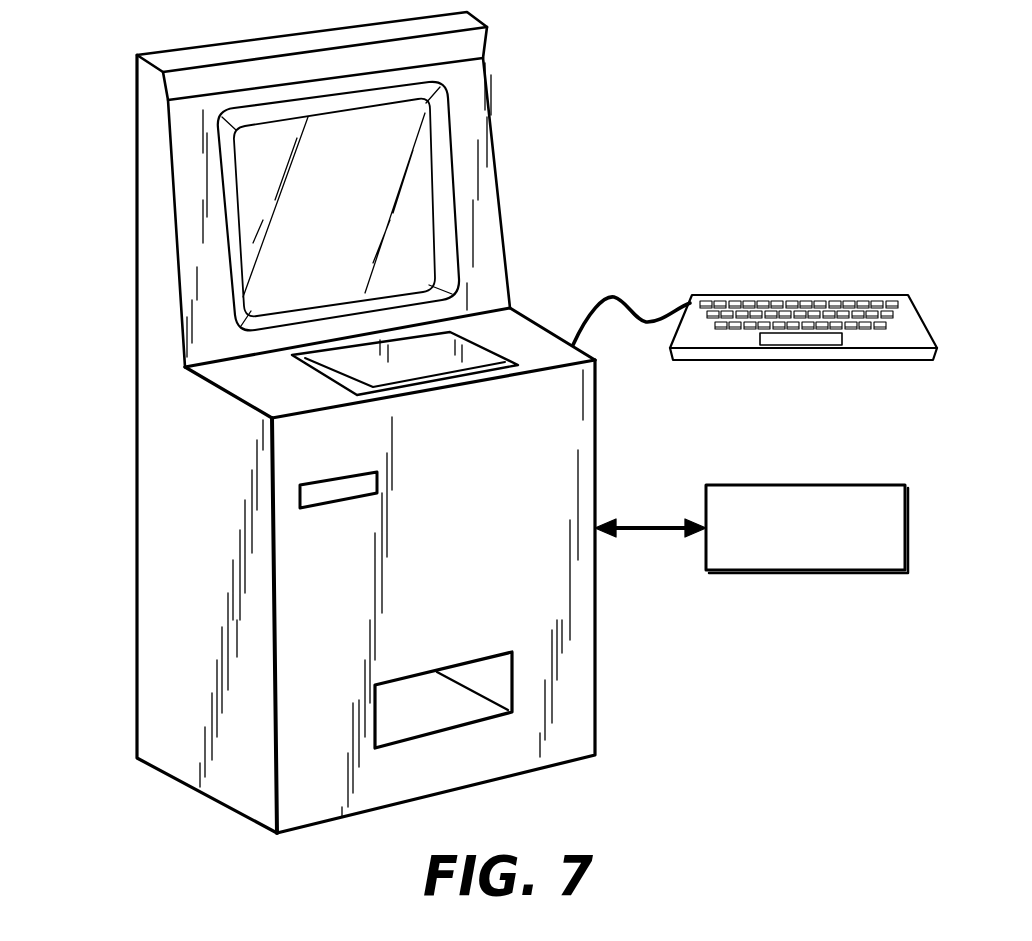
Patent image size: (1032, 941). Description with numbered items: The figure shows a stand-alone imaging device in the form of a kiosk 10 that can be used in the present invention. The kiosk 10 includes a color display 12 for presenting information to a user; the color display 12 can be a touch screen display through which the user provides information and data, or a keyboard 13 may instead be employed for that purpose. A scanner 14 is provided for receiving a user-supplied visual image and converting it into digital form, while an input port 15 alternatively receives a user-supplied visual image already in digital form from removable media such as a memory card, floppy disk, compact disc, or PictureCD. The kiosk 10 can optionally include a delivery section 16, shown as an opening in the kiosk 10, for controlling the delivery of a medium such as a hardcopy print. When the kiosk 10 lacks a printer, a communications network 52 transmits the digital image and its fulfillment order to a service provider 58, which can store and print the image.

The kiosk 10 is at (147, 148).
The color display 12 is at (412, 173).
The keyboard 13 is at (780, 293).
The scanner 14 is at (480, 357).
The input port 15 is at (355, 472).
The delivery section 16 is at (490, 674).
The communications network 52 is at (650, 530).
The service provider 58 is at (797, 571).